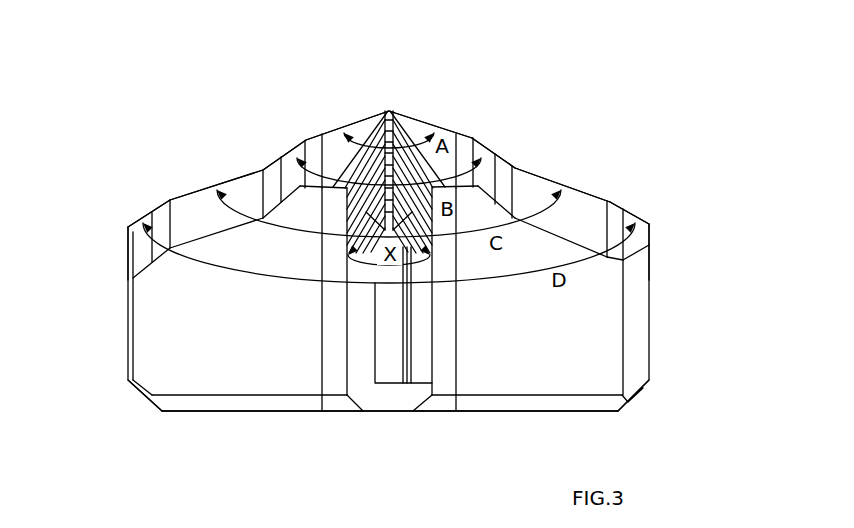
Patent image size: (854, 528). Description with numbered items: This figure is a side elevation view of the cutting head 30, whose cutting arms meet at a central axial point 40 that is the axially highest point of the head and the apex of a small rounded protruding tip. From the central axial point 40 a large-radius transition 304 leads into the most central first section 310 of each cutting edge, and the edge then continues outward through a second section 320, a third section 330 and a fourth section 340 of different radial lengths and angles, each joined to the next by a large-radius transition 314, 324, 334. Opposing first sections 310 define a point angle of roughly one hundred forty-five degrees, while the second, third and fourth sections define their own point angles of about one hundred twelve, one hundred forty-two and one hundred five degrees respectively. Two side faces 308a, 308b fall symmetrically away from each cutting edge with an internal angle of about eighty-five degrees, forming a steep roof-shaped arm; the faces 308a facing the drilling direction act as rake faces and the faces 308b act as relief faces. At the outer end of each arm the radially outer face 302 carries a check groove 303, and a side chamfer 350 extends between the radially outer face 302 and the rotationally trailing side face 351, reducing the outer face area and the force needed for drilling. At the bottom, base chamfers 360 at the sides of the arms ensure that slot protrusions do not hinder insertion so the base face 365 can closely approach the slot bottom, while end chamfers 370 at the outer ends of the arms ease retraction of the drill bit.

The cutting head 30 is at (127, 129).
The central axial point 40 is at (390, 110).
The radially outer face 302 is at (385, 325).
The check groove 303 is at (408, 358).
The transition 304 is at (377, 111).
The side face 308a is at (415, 217).
The relief face 308b is at (352, 231).
The first section 310 is at (341, 125).
The transition 314 is at (312, 132).
The second section 320 is at (293, 153).
The transition 324 is at (273, 162).
The third section 330 is at (212, 186).
The transition 334 is at (157, 204).
The fourth section 340 is at (131, 222).
The side chamfer 350 is at (357, 360).
The rotationally trailing side face 351 is at (577, 357).
The base chamfer 360 is at (372, 382).
The base face 365 is at (598, 410).
The end chamfer 370 is at (143, 398).